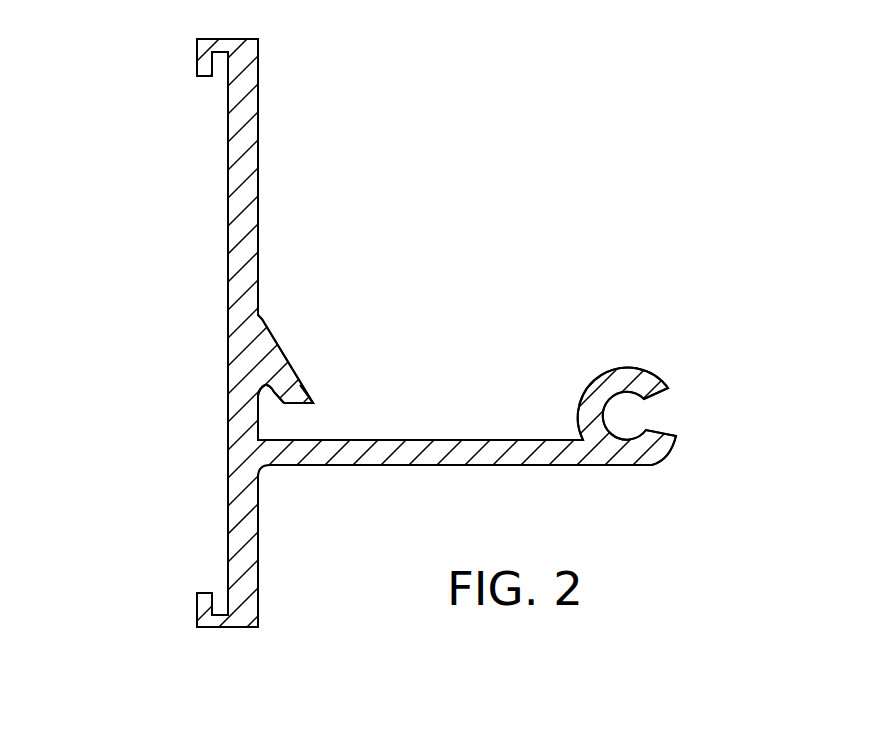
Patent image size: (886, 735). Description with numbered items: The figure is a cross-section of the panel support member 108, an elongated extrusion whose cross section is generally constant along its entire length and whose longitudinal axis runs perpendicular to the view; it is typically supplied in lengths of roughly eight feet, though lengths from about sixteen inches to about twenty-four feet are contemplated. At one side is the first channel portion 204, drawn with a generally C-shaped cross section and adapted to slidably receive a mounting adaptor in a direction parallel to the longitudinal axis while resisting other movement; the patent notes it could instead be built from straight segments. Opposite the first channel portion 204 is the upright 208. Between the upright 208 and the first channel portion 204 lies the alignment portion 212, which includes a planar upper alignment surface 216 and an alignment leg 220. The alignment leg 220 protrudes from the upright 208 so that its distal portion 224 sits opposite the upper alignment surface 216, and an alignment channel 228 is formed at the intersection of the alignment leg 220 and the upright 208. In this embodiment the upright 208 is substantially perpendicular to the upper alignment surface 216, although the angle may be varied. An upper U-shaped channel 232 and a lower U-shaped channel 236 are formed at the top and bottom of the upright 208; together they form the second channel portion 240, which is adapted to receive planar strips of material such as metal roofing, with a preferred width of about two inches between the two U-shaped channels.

The panel support member 108 is at (538, 115).
The first channel portion 204 is at (650, 382).
The upright 208 is at (258, 40).
The alignment portion 212 is at (450, 330).
The upper alignment surface 216 is at (497, 440).
The alignment leg 220 is at (292, 368).
The distal portion 224 is at (311, 404).
The alignment channel 228 is at (261, 398).
The upper U-shaped channel 232 is at (205, 74).
The lower U-shaped channel 236 is at (198, 593).
The second channel portion 240 is at (228, 262).